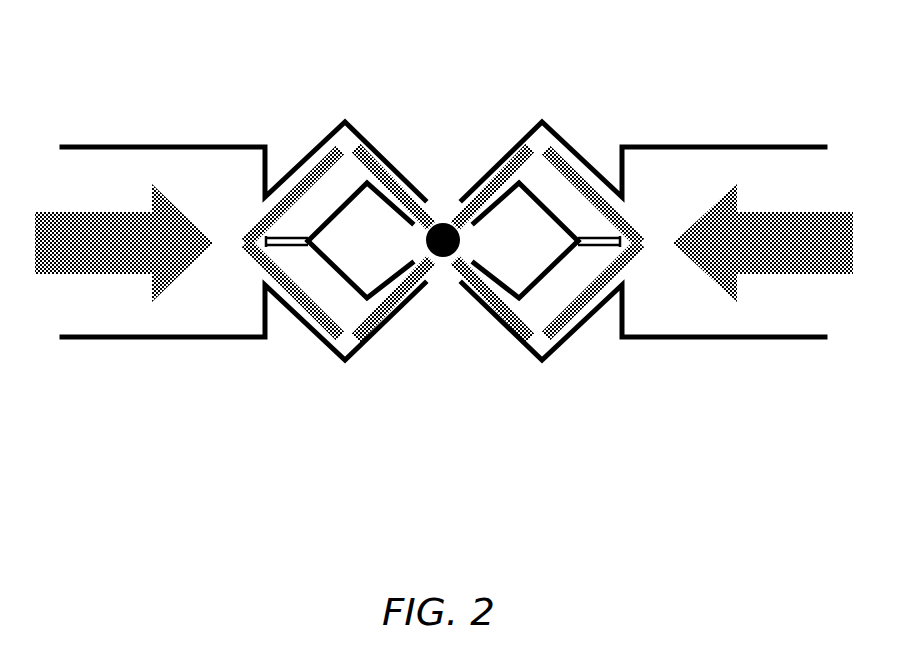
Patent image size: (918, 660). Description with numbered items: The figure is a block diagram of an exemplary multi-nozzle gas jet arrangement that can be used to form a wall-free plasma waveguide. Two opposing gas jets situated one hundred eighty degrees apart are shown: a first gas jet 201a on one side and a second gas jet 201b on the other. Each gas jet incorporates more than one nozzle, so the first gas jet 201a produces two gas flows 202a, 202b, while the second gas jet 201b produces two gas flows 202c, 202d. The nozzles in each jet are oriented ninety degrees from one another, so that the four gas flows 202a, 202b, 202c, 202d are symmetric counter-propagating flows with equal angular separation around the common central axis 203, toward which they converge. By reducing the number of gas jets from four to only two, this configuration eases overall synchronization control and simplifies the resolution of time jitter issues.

The first gas jet 201a is at (127, 292).
The second gas jet 201b is at (755, 185).
The gas flow 202a is at (402, 167).
The gas flow 202b is at (399, 313).
The gas flow 202c is at (486, 170).
The gas flow 202d is at (491, 309).
The central axis 203 is at (454, 275).